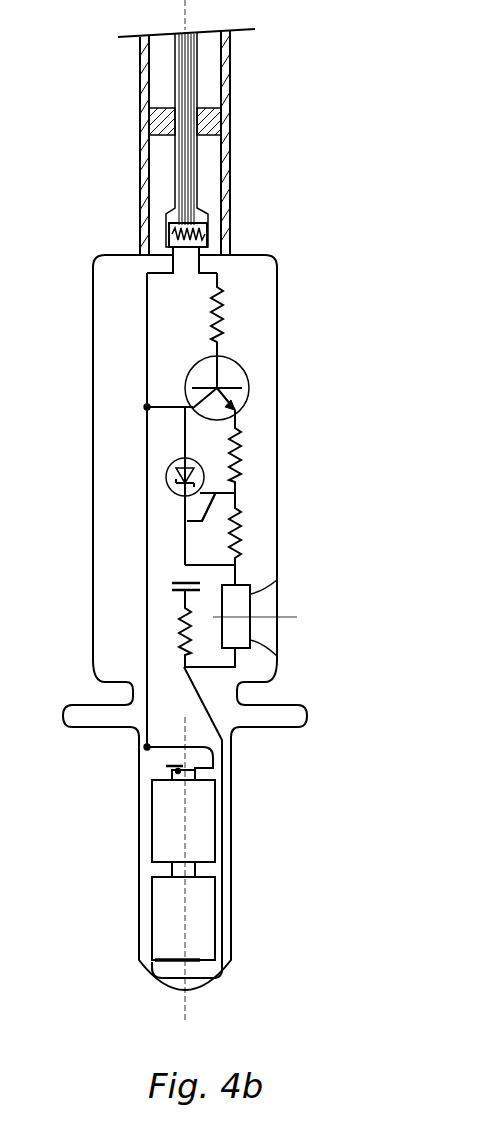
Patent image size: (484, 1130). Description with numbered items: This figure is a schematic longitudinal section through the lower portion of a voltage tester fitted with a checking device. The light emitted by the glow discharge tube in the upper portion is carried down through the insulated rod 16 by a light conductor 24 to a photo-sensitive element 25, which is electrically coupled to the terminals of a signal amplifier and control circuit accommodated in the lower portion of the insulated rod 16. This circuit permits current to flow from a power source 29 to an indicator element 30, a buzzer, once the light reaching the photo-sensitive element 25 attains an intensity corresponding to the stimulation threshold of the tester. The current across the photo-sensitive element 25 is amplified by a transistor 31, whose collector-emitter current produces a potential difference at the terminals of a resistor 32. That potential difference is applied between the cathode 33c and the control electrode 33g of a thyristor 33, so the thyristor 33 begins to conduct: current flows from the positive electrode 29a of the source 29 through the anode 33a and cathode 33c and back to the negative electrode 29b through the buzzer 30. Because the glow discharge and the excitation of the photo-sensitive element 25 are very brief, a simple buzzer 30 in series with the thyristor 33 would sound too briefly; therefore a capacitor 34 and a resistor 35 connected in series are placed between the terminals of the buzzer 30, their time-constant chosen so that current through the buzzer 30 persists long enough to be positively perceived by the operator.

The insulated rod 16 is at (230, 147).
The light conductor 24 is at (188, 72).
The photo-sensitive element 25 is at (200, 240).
The power source 29 is at (190, 910).
The positive electrode 29a is at (178, 770).
The negative electrode 29b is at (197, 960).
The indicator element 30 is at (235, 612).
The transistor 31 is at (237, 368).
The resistor 32 is at (243, 527).
The thyristor 33 is at (168, 472).
The anode 33a is at (185, 433).
The cathode 33c is at (185, 510).
The control electrode 33g is at (202, 522).
The capacitor 34 is at (172, 588).
The resistor 35 is at (182, 648).